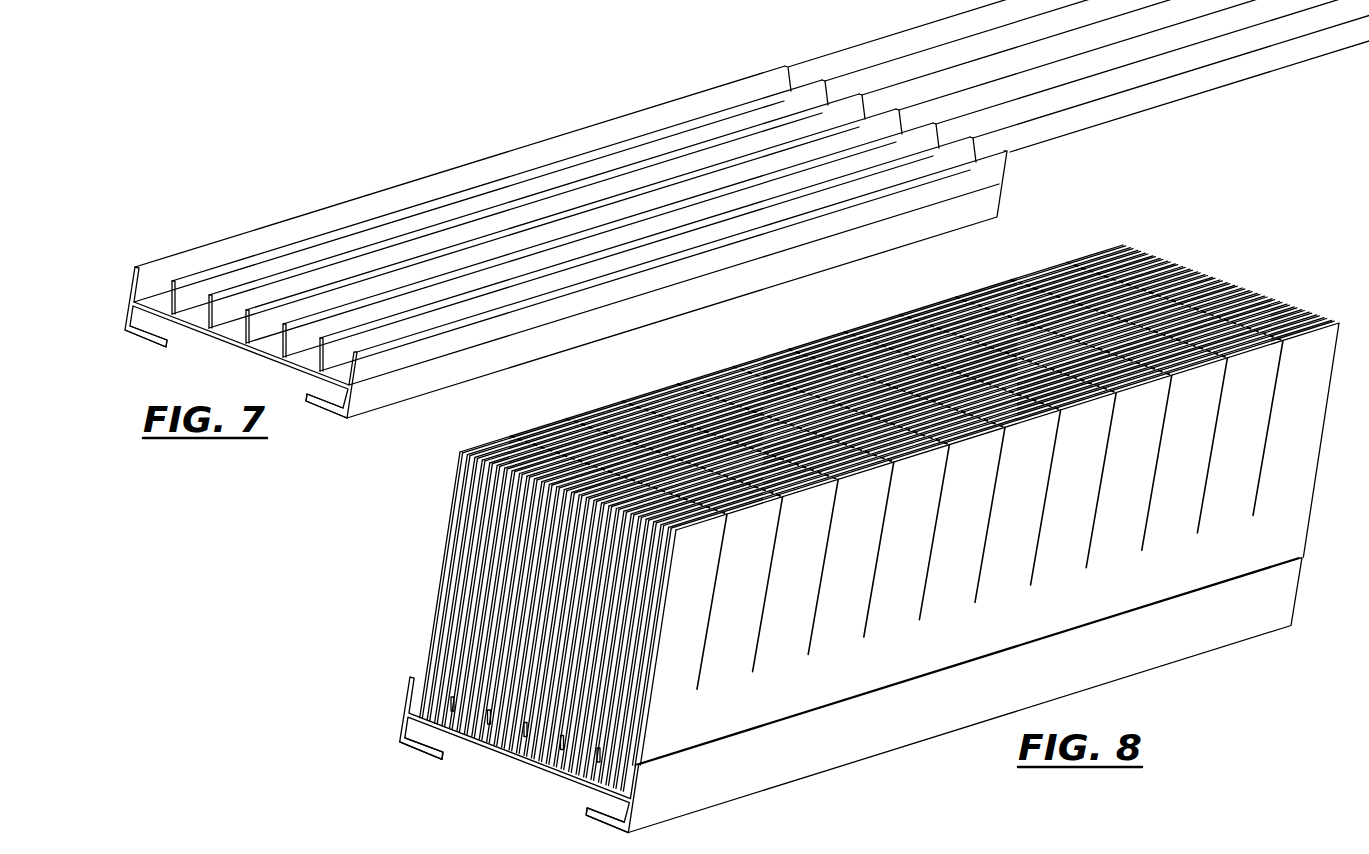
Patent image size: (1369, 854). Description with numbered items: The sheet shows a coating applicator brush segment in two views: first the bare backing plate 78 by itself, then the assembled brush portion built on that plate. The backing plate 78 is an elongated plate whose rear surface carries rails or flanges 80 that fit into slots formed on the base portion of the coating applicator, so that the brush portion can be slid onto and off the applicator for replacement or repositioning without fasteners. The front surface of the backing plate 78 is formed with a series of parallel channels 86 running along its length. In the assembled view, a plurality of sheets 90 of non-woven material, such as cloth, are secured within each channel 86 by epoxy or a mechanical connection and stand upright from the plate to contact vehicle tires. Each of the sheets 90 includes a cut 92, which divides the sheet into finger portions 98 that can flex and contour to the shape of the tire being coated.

In FIG. 7, the backing plate 78 is at (341, 192).
In FIG. 8, the backing plate 78 is at (823, 748).
In FIG. 7, the rails or flanges 80 is at (150, 333).
In FIG. 8, the rails or flanges 80 is at (438, 745).
In FIG. 7, the channels or slots 86 is at (776, 90).
In FIG. 8, the channels or slots 86 is at (417, 707).
In FIG. 8, the sheets of non-woven material 90 is at (1103, 595).
In FIG. 8, the cut 92 is at (825, 496).
In FIG. 8, the finger portions 98 is at (707, 594).